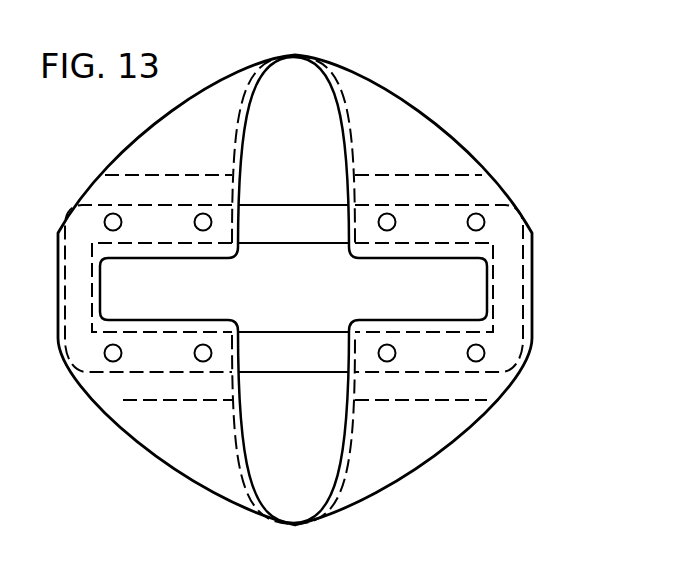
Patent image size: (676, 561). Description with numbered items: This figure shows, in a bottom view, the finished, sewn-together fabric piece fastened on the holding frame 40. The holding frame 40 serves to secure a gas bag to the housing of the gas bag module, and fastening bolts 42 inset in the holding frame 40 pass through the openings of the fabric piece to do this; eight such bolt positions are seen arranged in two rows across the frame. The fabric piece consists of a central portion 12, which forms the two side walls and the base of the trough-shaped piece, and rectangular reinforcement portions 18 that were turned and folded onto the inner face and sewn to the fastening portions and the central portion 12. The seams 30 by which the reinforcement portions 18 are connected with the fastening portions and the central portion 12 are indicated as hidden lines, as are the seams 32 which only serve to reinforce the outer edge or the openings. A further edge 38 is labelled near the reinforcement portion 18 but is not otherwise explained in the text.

The central portion 12 is at (417, 437).
The reinforcement portion 18 is at (473, 194).
The seam 30 is at (132, 173).
The reinforcing seam 32 is at (245, 113).
The right flange 38 is at (430, 177).
The holding frame 40 is at (298, 218).
The fastening bolt 42 is at (484, 225).